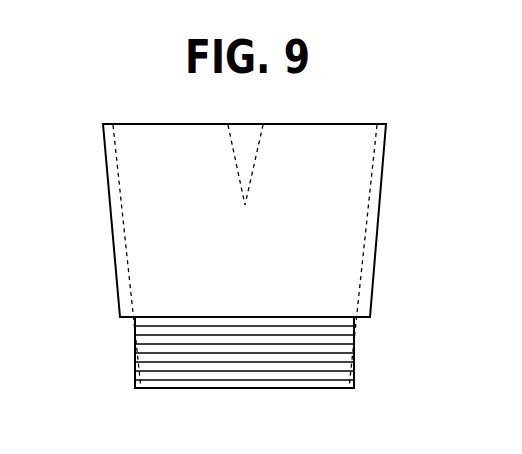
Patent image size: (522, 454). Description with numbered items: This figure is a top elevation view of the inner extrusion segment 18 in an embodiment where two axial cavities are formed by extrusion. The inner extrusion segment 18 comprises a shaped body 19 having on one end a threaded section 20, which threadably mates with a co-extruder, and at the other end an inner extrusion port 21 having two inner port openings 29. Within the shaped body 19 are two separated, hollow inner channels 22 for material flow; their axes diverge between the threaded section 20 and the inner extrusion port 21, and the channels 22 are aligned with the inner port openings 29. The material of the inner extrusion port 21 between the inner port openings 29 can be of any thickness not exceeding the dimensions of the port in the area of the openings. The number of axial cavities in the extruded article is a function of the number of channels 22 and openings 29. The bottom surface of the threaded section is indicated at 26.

The inner extrusion segment 18 is at (254, 262).
The shaped body 19 is at (254, 234).
The threaded section 20 is at (202, 380).
The inner extrusion port 21 is at (245, 123).
The channels 22 is at (153, 242).
The bottom surface 26 is at (263, 389).
The inner port openings 29 is at (145, 123).